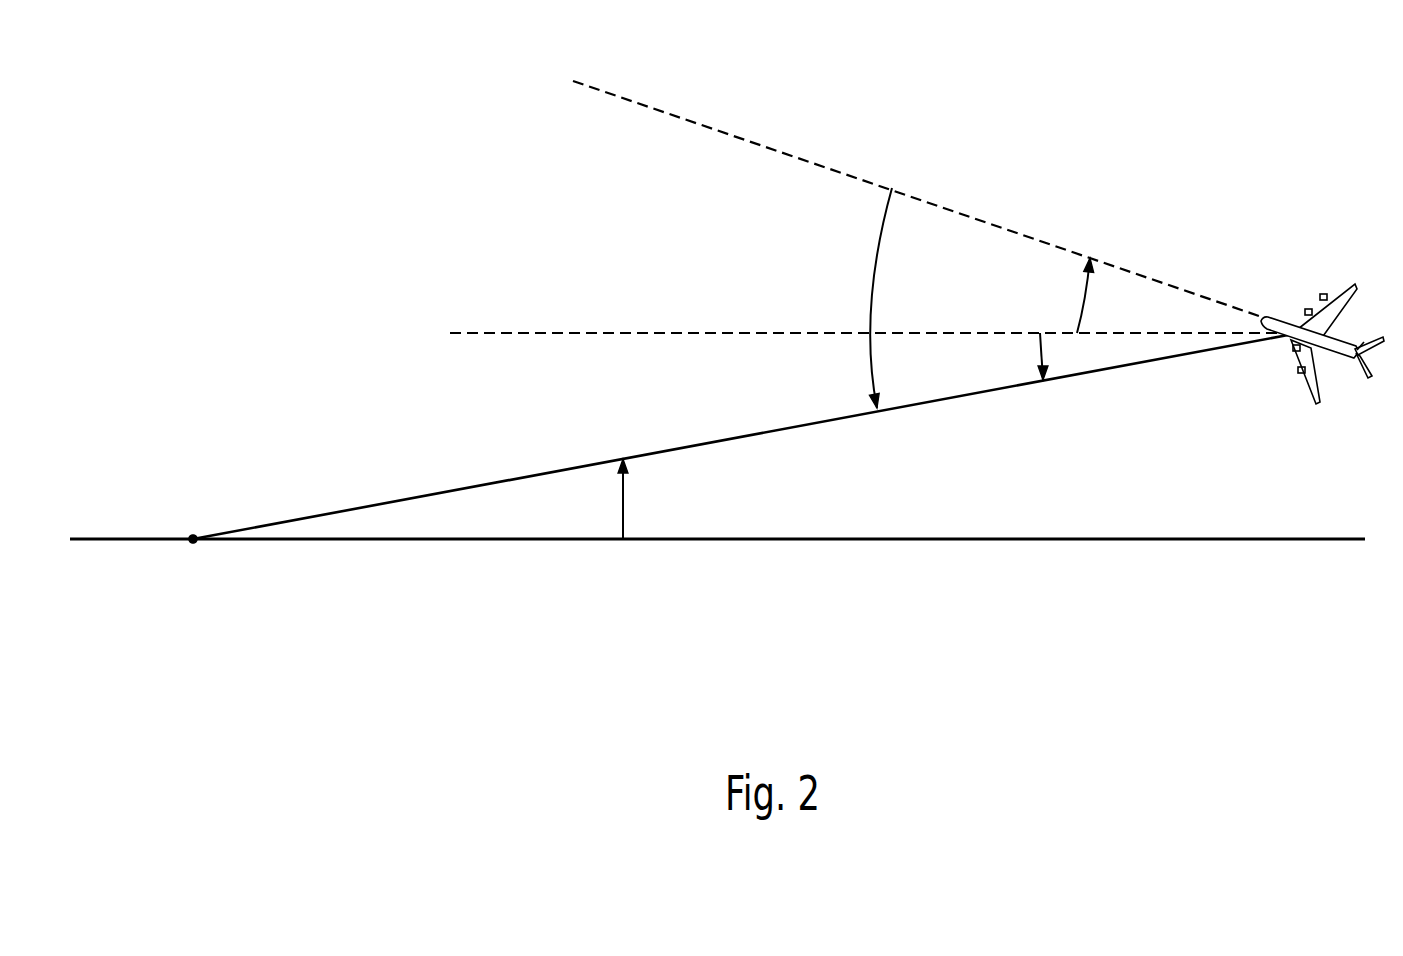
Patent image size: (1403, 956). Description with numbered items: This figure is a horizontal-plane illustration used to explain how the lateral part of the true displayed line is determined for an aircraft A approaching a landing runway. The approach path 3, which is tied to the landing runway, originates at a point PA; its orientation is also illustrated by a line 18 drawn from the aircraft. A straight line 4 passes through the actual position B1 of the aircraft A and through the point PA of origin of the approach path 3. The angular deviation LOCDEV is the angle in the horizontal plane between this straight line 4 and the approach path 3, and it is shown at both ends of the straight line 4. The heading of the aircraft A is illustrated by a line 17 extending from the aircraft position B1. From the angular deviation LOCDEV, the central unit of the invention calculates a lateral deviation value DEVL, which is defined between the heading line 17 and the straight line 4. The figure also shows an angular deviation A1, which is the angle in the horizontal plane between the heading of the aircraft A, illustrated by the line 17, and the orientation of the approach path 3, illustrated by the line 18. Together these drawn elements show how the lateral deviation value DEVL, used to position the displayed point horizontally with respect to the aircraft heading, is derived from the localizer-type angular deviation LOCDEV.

The approach path 3 is at (1080, 538).
The straight line 4 is at (723, 441).
The heading line 17 is at (950, 208).
The approach path orientation line 18 is at (652, 334).
The point of origin of the approach path PA is at (193, 537).
The aircraft A is at (1337, 354).
The actual position of the aircraft B1 is at (1289, 299).
The angular deviation A1 is at (1067, 295).
The lateral deviation value DEVL is at (846, 298).
The angular deviation LOCDEV is at (833, 436).